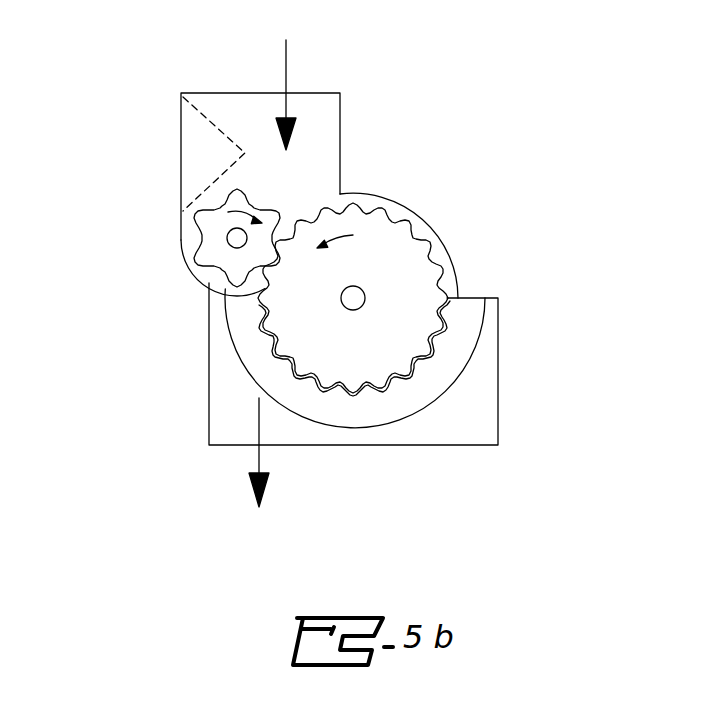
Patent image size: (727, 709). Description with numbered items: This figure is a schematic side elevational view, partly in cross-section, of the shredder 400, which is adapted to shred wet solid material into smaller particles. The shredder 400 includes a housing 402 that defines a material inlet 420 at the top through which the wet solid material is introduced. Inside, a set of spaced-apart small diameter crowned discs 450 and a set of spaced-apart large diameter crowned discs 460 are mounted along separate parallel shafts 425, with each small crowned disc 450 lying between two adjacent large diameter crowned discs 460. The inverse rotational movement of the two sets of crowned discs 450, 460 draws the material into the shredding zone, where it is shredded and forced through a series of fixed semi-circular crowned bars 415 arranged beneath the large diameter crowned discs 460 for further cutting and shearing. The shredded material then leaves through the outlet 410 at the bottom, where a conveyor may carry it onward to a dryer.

The shredder 400 is at (506, 390).
The housing 402 is at (492, 343).
The outlet 410 is at (277, 457).
The semi-circular crowned bars 415 is at (428, 408).
The material inlet 420 is at (212, 92).
The shafts 425 is at (343, 306).
The small diameter crowned discs 450 is at (207, 246).
The large diameter crowned discs 460 is at (383, 238).